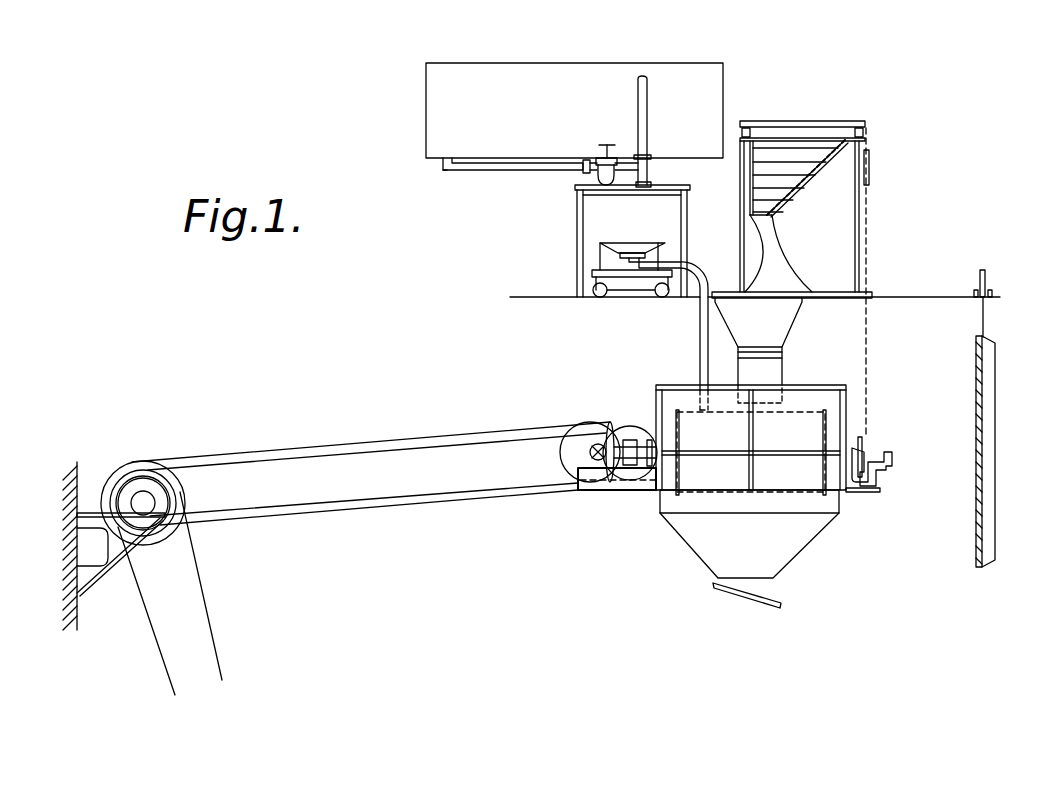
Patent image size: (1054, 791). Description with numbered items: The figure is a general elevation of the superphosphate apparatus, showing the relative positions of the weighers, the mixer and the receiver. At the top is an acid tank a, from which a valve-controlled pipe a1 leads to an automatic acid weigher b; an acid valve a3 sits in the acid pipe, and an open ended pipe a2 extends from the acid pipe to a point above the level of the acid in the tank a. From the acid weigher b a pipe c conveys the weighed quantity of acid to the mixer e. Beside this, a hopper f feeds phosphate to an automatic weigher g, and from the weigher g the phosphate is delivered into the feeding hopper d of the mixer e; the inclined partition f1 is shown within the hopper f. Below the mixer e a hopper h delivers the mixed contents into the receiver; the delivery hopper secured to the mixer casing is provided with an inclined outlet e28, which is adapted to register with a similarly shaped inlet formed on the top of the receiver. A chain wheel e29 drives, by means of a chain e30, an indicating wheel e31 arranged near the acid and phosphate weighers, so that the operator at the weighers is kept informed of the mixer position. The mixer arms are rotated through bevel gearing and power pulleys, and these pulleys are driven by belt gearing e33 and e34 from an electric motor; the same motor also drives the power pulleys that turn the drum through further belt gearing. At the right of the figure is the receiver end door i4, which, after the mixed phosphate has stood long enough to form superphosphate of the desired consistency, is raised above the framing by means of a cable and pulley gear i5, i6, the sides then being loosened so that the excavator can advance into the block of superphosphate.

The acid tank a is at (517, 78).
The valve-controlled pipe a1 is at (490, 167).
The open ended pipe a2 is at (644, 102).
The acid valve a3 is at (603, 161).
The automatic acid weigher b is at (610, 203).
The pipe c is at (638, 263).
The feeding hopper d is at (788, 326).
The mixer e is at (693, 417).
The hopper f is at (797, 178).
The inclined partition f1 is at (790, 137).
The automatic weigher g is at (782, 252).
The hopper h is at (692, 530).
The inclined outlet e28 is at (775, 600).
The chain wheel e29 is at (864, 447).
The chain e30 is at (866, 362).
The indicating wheel e31 is at (843, 168).
The belt gearing e33 is at (300, 453).
The belt gearing e34 is at (202, 571).
The end door i4 is at (988, 418).
The cable and pulley gear i5 is at (986, 320).
The cable and pulley gear i6 is at (988, 276).